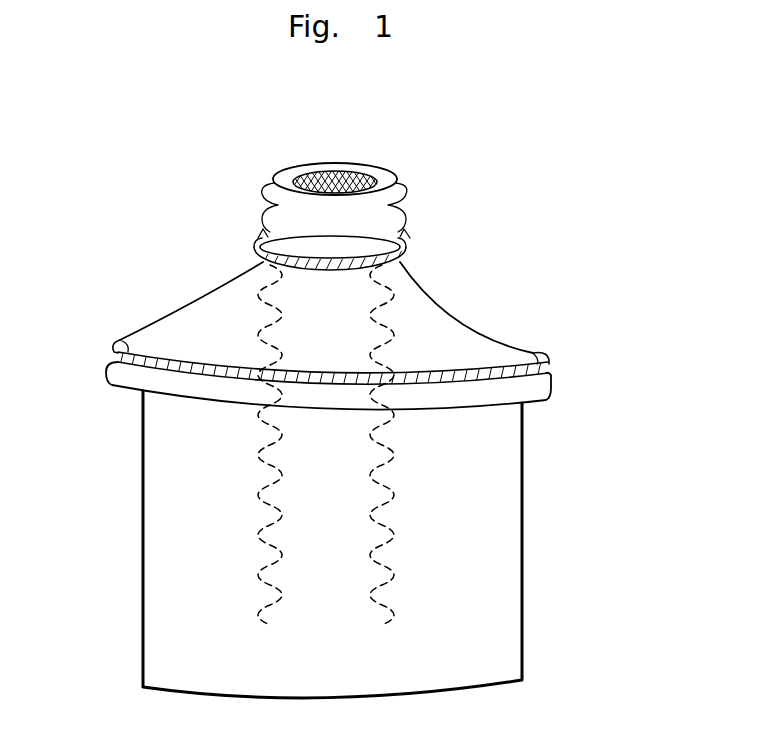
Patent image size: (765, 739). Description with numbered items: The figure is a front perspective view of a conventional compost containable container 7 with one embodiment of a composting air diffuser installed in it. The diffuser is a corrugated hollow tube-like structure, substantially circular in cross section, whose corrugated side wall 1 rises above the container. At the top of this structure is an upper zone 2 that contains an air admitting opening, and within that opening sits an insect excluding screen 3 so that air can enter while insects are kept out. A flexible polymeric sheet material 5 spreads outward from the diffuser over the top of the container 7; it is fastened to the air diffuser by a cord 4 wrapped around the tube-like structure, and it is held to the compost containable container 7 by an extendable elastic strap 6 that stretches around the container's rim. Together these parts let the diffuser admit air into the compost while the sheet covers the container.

The corrugated side wall 1 is at (270, 217).
The upper zone 2 is at (377, 175).
The insect excluding screen 3 is at (363, 192).
The cord 4 is at (390, 252).
The flexible polymeric sheet material 5 is at (423, 330).
The extendable elastic strap 6 is at (547, 367).
The container 7 is at (445, 510).